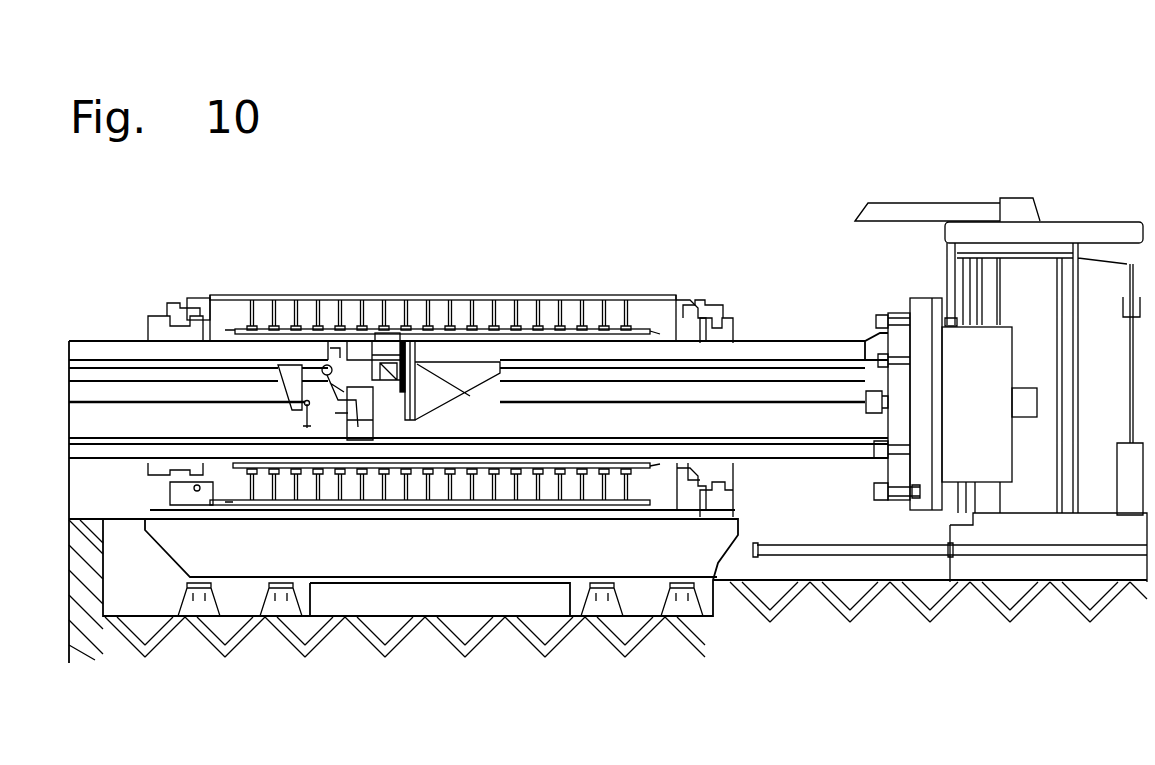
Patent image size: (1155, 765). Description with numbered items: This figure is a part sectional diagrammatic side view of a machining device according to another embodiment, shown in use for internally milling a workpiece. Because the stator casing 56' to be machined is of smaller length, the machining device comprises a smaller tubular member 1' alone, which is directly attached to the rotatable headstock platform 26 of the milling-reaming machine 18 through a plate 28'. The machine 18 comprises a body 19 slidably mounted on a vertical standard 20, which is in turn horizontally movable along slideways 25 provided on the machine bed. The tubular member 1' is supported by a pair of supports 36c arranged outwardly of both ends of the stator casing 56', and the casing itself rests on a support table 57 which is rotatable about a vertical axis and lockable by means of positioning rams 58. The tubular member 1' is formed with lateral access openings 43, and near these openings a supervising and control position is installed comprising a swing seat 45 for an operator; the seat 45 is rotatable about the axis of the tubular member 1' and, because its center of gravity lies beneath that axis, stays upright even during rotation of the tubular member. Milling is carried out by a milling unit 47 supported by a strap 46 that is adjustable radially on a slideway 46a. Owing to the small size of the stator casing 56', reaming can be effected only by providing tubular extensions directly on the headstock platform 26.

The smaller tubular member 1' is at (478, 463).
The reaming-milling machine 18 is at (1085, 219).
The body 19 is at (990, 354).
The vertical standard 20 is at (1042, 488).
The slideways 25 is at (921, 563).
The rotatable headstock platform 26 is at (922, 312).
The plate 28' is at (863, 415).
The supports 36c is at (145, 308).
The lateral access openings 43 is at (348, 356).
The swing seat 45 is at (312, 432).
The strap 46 is at (470, 396).
The slideway 46a is at (414, 418).
The milling unit 47 is at (391, 340).
The stator casing 56' is at (446, 368).
The support table 57 is at (400, 558).
The positioning rams 58 is at (266, 606).